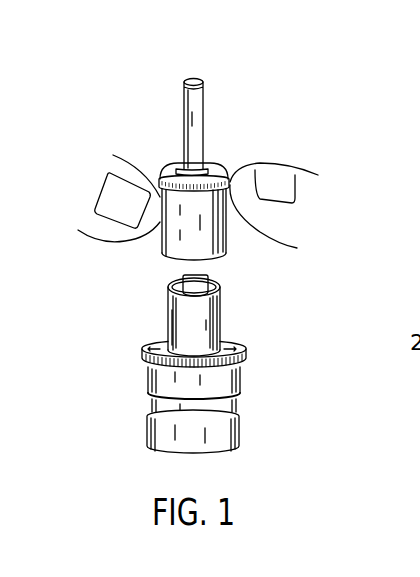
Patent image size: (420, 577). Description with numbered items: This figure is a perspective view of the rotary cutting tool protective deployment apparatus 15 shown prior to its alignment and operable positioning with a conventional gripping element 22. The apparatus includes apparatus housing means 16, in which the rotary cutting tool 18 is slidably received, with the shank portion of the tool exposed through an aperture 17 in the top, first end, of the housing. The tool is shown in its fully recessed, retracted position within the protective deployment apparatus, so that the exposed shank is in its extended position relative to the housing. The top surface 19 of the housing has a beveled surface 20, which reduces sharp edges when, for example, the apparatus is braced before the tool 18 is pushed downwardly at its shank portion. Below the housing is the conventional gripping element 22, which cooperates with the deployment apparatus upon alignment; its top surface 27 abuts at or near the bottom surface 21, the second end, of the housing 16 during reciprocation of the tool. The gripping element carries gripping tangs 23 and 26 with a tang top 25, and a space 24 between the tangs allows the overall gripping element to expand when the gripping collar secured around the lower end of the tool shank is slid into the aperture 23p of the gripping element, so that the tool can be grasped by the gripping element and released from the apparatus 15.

The rotary cutting tool protective deployment apparatus 15 is at (205, 168).
The apparatus housing means 16 is at (212, 235).
The aperture 17 is at (207, 148).
The rotary cutting tool 18 is at (208, 103).
The top surface 19 is at (178, 166).
The beveled surface 20 is at (160, 178).
The bottom surface 21 is at (163, 254).
The conventional gripping element 22 is at (204, 364).
The gripping tang 23 is at (190, 312).
The aperture 23p is at (169, 288).
The space 24 is at (168, 328).
The tang top 25 is at (220, 278).
The gripping tang 26 is at (222, 321).
The top surface 27 is at (146, 350).